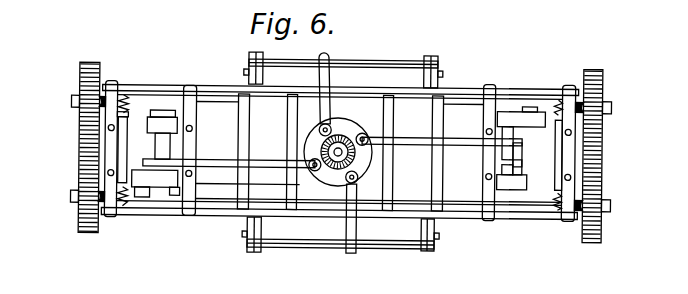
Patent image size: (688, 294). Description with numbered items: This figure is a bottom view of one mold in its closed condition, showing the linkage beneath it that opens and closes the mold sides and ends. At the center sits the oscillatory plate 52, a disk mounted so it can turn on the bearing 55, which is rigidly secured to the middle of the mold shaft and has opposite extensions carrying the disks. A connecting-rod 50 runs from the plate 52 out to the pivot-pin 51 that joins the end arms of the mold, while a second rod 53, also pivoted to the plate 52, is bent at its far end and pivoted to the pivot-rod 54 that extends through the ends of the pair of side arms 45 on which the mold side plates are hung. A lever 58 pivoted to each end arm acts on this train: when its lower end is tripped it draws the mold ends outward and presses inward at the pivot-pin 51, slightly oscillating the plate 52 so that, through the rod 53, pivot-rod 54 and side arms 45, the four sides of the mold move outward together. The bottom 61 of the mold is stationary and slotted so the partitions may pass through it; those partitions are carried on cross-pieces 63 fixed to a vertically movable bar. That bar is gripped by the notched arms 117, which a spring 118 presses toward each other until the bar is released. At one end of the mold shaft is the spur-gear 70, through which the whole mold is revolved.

The side arms 45 is at (250, 55).
The connecting-rods 50 is at (258, 161).
The pivot-pin 51 is at (128, 142).
The oscillatory plate 52 is at (361, 168).
The rod 53 is at (330, 79).
The pivot-rod 54 is at (392, 62).
The bearing 55 is at (350, 128).
The lever 58 is at (538, 135).
The bottom of the mold 61 is at (340, 150).
The cross-pieces 63 is at (243, 123).
The spur-gear 70 is at (80, 129).
The arms 117 is at (125, 134).
The spring 118 is at (126, 112).